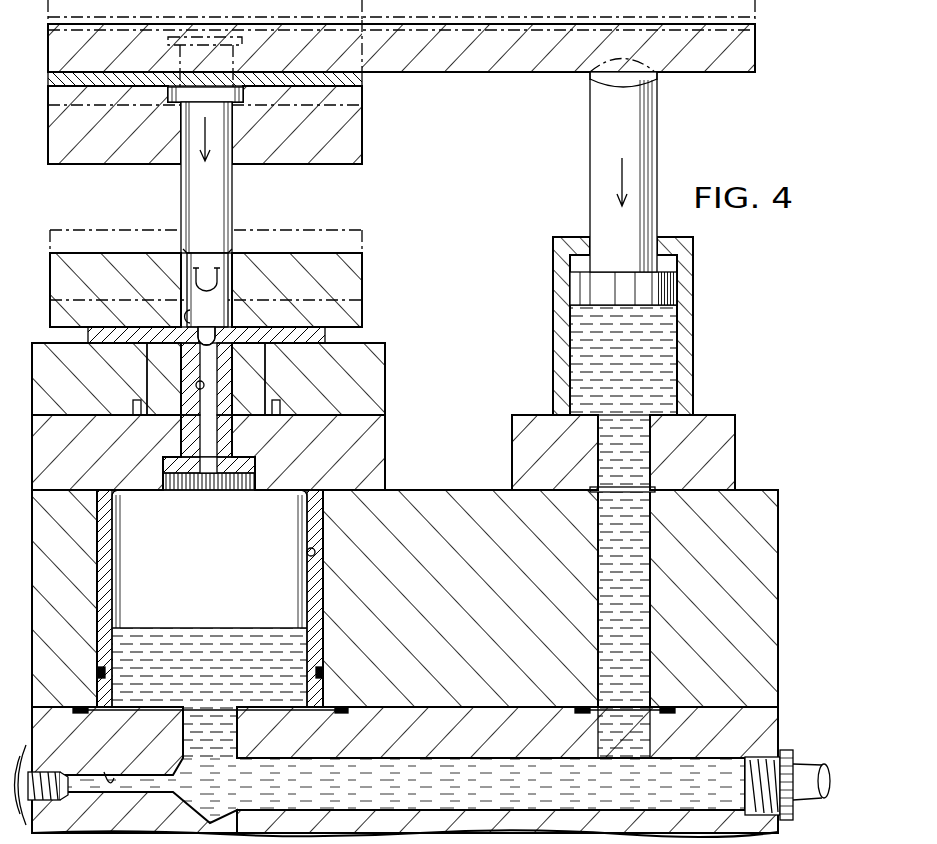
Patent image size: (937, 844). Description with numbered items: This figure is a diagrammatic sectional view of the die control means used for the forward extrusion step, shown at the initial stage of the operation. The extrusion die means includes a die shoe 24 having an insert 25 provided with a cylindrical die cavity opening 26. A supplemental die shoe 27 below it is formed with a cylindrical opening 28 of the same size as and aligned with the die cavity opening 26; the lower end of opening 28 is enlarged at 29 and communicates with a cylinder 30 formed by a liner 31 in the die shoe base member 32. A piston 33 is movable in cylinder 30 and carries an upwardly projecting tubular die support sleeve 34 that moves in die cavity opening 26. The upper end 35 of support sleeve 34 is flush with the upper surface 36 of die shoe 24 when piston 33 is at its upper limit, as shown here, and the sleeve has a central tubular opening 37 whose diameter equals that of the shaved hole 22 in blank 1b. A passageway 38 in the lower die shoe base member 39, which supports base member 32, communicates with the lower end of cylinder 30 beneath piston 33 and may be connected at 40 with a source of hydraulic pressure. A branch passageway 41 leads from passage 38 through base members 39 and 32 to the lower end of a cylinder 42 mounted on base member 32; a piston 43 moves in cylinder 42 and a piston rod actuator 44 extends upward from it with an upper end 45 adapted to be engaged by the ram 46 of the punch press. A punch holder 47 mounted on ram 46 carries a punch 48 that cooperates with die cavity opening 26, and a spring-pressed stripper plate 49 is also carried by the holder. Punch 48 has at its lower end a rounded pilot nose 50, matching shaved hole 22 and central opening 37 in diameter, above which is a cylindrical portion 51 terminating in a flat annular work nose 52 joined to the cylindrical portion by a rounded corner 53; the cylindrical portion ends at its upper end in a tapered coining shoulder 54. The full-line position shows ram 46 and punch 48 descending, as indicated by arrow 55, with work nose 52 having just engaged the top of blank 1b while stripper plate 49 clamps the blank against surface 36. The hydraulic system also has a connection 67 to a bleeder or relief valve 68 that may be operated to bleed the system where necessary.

The shaved blank 1b is at (330, 334).
The shaved hole 22 is at (222, 337).
The die shoe 24 is at (375, 378).
The insert 25 is at (258, 360).
The die cavity opening 26 is at (240, 388).
The supplemental die shoe 27 is at (360, 448).
The cylindrical opening 28 is at (237, 428).
The enlarged lower end of opening 28 29 is at (255, 472).
The cylinder 30 is at (307, 550).
The liner 31 is at (318, 585).
The die shoe base member 32 is at (476, 512).
The piston 33 is at (214, 594).
The die support sleeve 34 is at (185, 432).
The upper end of support sleeve 35 is at (197, 342).
The upper surface of die shoe 36 is at (372, 343).
The central tubular opening 37 is at (196, 383).
The passageway 38 is at (380, 793).
The die shoe base member 39 is at (593, 818).
The connection 40 is at (803, 748).
The branch passageway 41 is at (650, 645).
The cylinder 42 is at (695, 388).
The piston 43 is at (657, 293).
The piston rod actuator 44 is at (640, 136).
The upper end of piston rod actuator 45 is at (620, 84).
The ram 46 is at (722, 52).
The punch holder 47 is at (330, 136).
The punch 48 is at (234, 177).
The stripper plate 49 is at (88, 270).
The pilot nose 50 is at (200, 338).
The cylindrical portion 51 is at (228, 275).
The work nose 52 is at (212, 320).
The rounded corner 53 is at (190, 323).
The coining shoulder 54 is at (210, 256).
The arrow 55 is at (200, 133).
The connection 67 is at (107, 778).
The bleeder or relief valve 68 is at (22, 770).